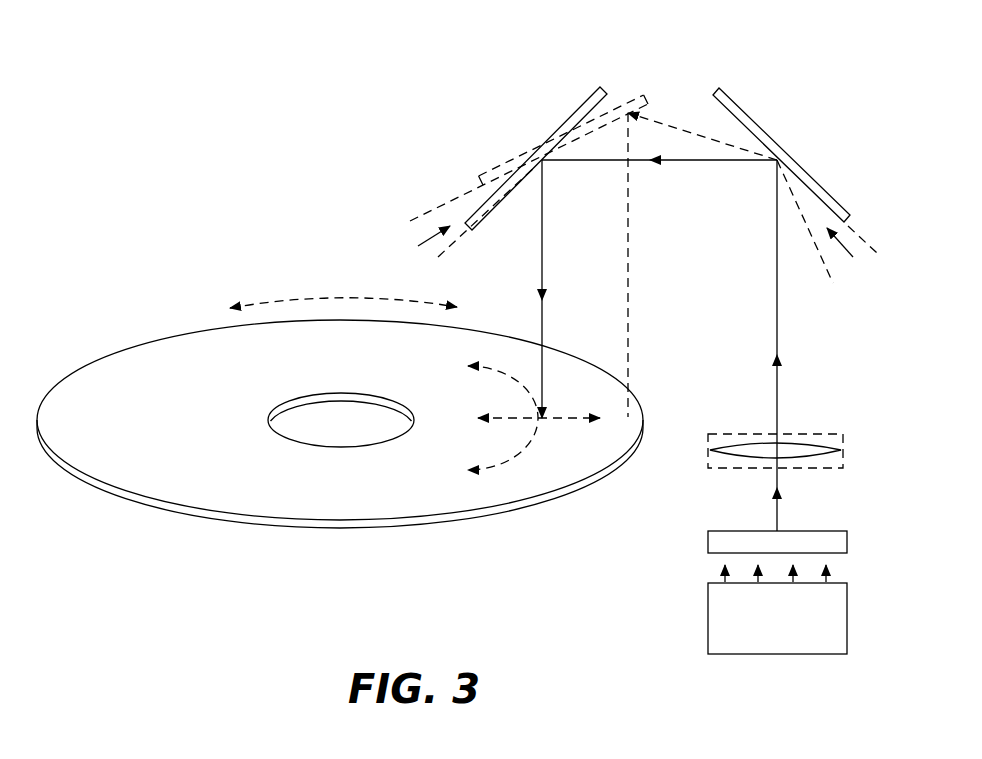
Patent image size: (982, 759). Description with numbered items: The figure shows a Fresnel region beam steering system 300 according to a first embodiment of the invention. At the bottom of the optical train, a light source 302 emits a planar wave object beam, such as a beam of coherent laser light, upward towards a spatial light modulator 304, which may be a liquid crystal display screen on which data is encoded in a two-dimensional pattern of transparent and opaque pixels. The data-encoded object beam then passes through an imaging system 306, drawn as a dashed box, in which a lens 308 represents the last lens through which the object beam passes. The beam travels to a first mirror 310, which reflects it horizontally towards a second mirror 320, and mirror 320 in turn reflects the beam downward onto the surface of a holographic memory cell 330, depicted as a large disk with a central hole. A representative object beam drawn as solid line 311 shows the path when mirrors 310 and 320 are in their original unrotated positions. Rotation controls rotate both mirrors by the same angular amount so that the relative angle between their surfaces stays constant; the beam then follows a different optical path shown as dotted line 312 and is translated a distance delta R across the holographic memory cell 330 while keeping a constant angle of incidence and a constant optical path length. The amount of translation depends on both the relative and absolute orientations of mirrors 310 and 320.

The Fresnel region beam steering system 300 is at (170, 548).
The holographic memory cell 330 is at (318, 531).
The mirror 320 is at (598, 86).
The mirror 310 is at (717, 86).
The dotted line 312 is at (681, 124).
The solid line 311 is at (720, 166).
The imaging system 306 is at (720, 432).
The lens 308 is at (706, 451).
The spatial light modulator 304 is at (706, 542).
The light source 302 is at (706, 632).